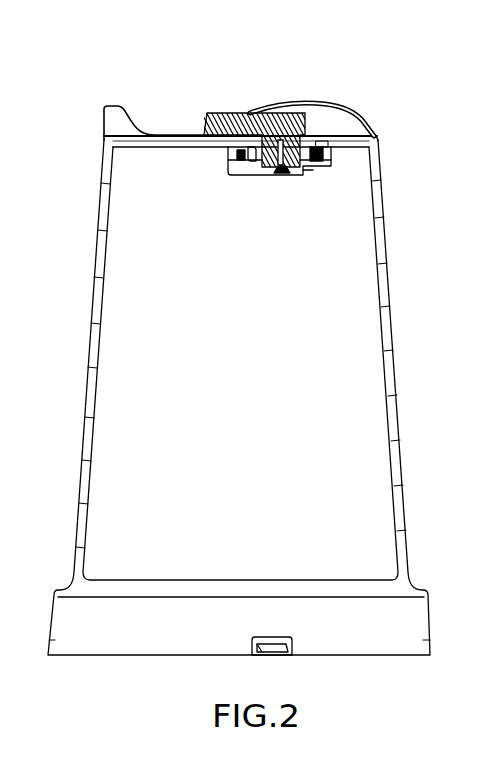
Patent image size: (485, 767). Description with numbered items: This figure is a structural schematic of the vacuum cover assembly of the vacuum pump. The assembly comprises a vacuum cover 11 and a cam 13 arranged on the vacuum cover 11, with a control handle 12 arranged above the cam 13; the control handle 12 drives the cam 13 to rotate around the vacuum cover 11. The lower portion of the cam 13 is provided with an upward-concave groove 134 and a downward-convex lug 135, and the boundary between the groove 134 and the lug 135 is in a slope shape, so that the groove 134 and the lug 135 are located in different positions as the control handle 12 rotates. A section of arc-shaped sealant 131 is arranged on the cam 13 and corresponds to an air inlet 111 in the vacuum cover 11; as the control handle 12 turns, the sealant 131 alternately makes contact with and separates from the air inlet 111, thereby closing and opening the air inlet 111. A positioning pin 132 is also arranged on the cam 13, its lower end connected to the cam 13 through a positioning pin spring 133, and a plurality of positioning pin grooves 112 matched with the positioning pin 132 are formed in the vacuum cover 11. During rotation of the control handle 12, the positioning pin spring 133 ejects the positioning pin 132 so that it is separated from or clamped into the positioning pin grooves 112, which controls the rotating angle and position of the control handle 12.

The vacuum cover 11 is at (265, 380).
The air inlet 111 is at (369, 98).
The positioning pin grooves 112 is at (239, 95).
The control handle 12 is at (312, 79).
The cam 13 is at (338, 146).
The arc-shaped sealant 131 is at (377, 121).
The positioning pin 132 is at (169, 103).
The positioning pin spring 133 is at (138, 117).
The groove 134 is at (392, 202).
The lug 135 is at (370, 215).